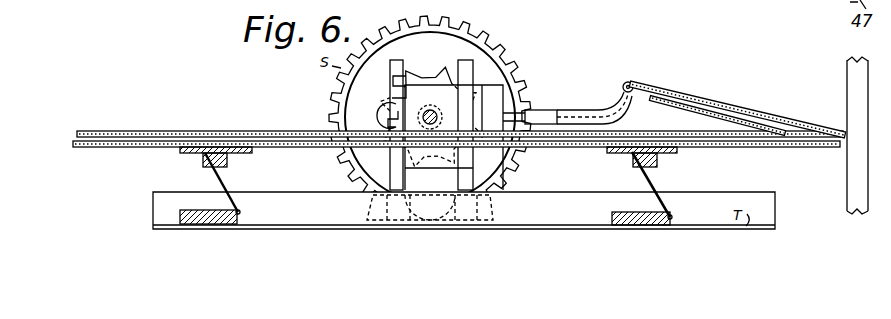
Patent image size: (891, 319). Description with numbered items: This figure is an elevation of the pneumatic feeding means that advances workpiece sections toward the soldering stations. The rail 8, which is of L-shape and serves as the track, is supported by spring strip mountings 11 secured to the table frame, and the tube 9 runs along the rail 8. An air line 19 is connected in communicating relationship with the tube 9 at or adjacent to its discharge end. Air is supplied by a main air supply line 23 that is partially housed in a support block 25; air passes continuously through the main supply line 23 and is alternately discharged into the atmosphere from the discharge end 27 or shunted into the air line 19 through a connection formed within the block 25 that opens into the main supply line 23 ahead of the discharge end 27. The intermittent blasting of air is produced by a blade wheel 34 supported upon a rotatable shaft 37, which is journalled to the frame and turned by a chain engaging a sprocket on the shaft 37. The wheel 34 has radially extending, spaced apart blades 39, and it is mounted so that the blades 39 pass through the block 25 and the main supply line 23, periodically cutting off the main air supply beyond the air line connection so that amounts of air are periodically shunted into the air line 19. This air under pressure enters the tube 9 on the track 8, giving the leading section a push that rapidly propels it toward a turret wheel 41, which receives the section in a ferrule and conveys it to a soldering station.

The rail 8 is at (274, 200).
The tube 9 is at (735, 148).
The spring strip mountings 11 is at (212, 169).
The air line 19 is at (559, 111).
The main air supply line 23 is at (548, 110).
The support block 25 is at (516, 78).
The discharge end 27 is at (502, 93).
The blade wheel 34 is at (395, 80).
The rotatable shaft 37 is at (418, 113).
The blades 39 is at (428, 68).
The turret wheel 41 is at (847, 66).